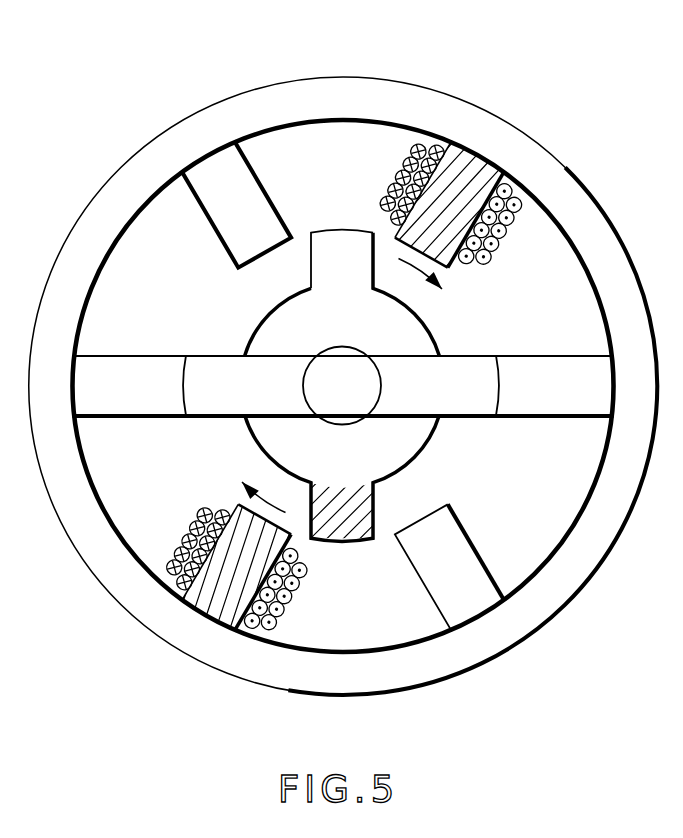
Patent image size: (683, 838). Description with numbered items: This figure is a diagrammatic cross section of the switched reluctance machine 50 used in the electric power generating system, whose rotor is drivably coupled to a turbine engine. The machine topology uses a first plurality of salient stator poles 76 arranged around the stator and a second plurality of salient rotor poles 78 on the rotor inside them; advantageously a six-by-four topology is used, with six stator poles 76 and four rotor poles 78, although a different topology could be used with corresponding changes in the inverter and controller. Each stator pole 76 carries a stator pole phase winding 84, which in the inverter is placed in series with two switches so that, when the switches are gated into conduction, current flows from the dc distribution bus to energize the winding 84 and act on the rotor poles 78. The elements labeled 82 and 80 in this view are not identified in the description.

The switched reluctance machine 50 is at (535, 100).
The stator housing / outer shell 82 is at (235, 96).
The salient stator poles 76 is at (472, 173).
The salient rotor poles 78 is at (301, 262).
The rotor 80 is at (305, 356).
The stator pole phase winding 84 is at (508, 222).